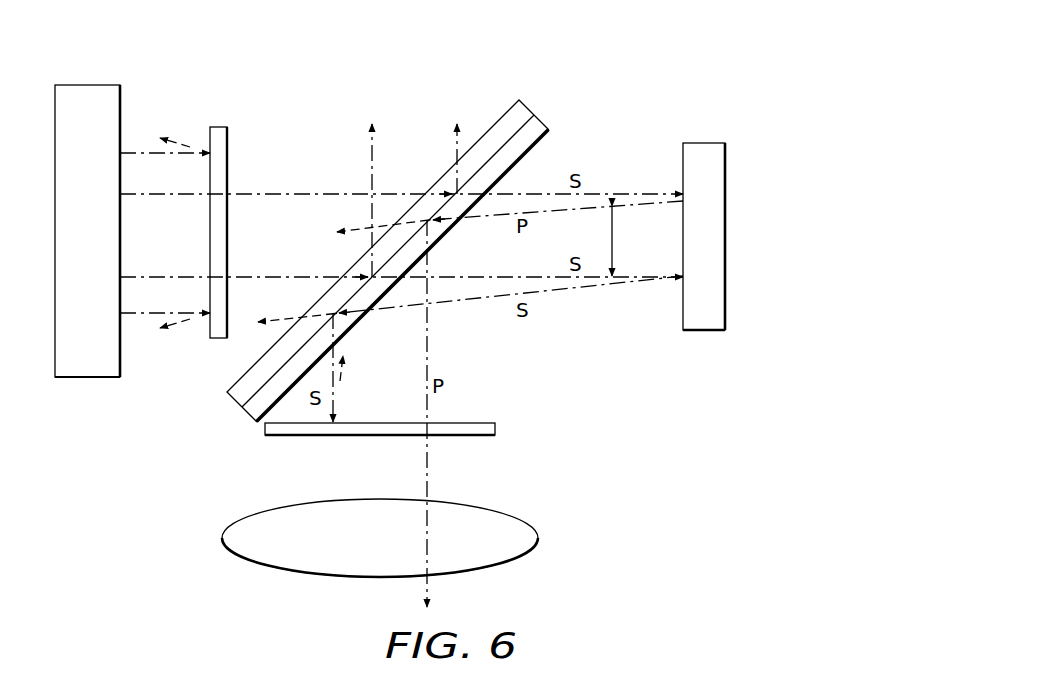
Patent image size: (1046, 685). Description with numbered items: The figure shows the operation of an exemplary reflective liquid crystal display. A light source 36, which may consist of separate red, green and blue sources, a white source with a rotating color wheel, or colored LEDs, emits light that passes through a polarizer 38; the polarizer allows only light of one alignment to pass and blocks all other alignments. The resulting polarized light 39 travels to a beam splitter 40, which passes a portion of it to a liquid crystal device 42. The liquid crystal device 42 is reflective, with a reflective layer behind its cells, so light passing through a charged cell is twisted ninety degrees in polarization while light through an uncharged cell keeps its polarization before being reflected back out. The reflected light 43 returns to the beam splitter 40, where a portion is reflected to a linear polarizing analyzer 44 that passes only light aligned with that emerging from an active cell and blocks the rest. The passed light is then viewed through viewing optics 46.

The light source 36 is at (83, 379).
The polarizer 38 is at (228, 162).
The polarized light 39 is at (298, 192).
The beam splitter 40 is at (227, 399).
The liquid crystal device 42 is at (703, 332).
The reflected light 43 is at (616, 238).
The linear polarizing analyzer 44 is at (298, 437).
The viewing optics 46 is at (222, 538).